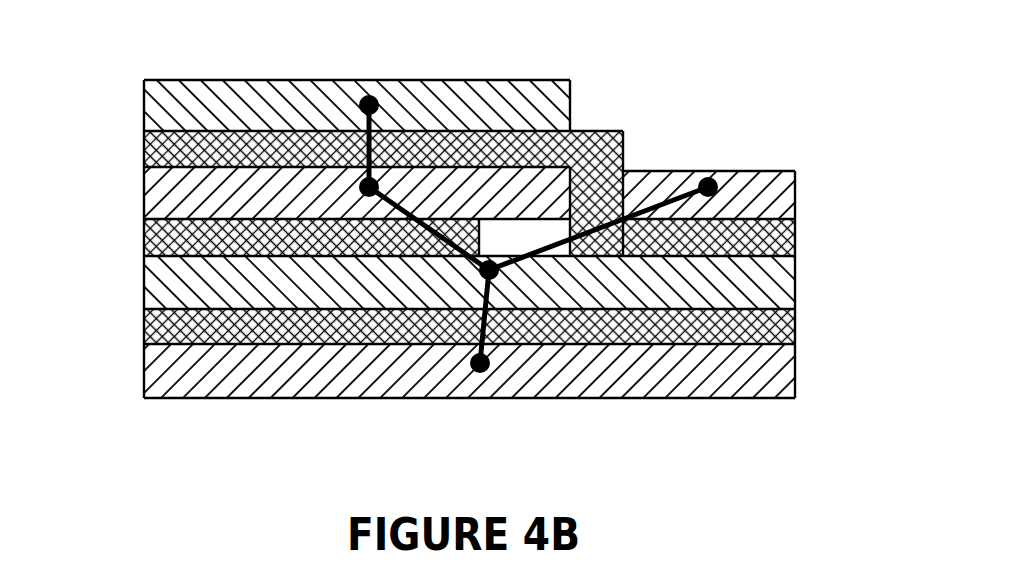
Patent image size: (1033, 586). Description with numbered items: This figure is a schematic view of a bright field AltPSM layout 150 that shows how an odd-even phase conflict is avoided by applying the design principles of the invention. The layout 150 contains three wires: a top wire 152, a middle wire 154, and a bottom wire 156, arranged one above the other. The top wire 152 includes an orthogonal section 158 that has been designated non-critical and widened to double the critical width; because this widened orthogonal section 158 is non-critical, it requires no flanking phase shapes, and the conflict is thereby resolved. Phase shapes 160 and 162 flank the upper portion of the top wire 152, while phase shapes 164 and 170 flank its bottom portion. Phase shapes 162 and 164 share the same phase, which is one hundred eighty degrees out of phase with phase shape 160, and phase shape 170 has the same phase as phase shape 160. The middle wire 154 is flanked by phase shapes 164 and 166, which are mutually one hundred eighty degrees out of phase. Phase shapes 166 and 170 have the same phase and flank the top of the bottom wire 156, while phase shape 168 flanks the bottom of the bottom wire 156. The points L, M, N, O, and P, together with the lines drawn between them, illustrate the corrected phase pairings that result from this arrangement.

The bright field AltPSM layout 150 is at (778, 130).
The top wire 152 is at (162, 147).
The middle wire 154 is at (162, 233).
The bottom wire 156 is at (162, 318).
The orthogonal section 158 is at (603, 131).
The phase shape 160 is at (162, 103).
The phase shape 162 is at (777, 205).
The phase shape 164 is at (162, 190).
The phase shape 166 is at (162, 277).
The phase shape 168 is at (162, 362).
The phase shape 170 is at (772, 288).
The point L is at (360, 102).
The point M is at (362, 182).
The point N is at (480, 271).
The point O is at (483, 372).
The point P is at (700, 178).